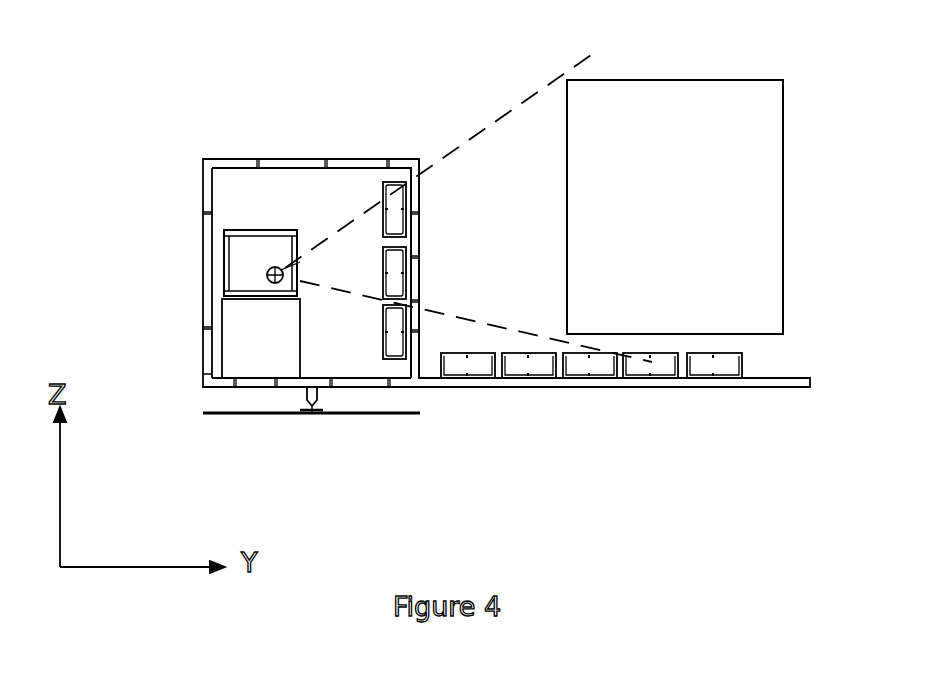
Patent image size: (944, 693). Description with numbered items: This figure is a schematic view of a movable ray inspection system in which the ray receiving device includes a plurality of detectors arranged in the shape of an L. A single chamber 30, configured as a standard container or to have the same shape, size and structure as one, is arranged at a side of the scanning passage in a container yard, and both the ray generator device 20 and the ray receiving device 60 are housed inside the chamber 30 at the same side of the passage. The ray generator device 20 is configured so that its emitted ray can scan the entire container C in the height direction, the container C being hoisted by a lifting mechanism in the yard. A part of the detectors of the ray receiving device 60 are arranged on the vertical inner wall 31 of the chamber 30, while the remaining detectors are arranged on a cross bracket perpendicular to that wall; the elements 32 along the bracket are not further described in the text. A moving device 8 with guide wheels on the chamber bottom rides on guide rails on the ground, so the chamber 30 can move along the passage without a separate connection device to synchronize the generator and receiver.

The chamber 30 is at (242, 150).
The ray receiving device 60 is at (395, 200).
The ray generator device 20 is at (250, 252).
The vertical inner wall 31 is at (417, 231).
The moving device 8 is at (292, 402).
The conveyor trays 32 is at (660, 383).
The container C is at (753, 122).